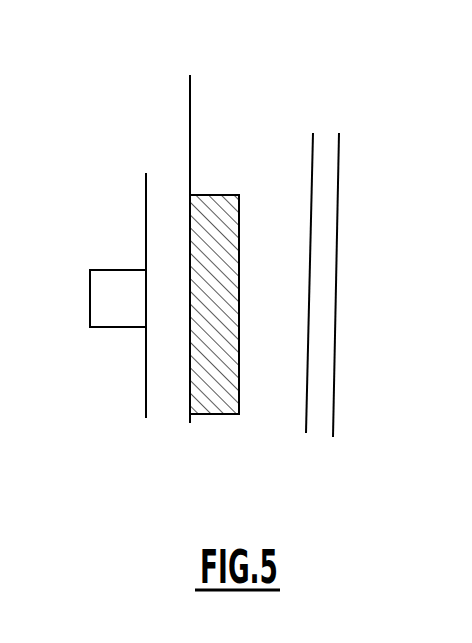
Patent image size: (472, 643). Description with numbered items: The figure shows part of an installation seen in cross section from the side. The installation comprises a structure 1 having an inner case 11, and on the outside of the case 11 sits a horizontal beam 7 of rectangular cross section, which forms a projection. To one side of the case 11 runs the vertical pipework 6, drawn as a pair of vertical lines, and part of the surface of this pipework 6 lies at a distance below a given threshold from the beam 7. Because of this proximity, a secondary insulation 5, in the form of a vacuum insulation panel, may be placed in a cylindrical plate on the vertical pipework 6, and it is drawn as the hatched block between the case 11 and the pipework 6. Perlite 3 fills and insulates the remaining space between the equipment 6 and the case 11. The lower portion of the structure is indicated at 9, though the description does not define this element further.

The structure 1 is at (157, 230).
The perlite 3 is at (215, 137).
The secondary insulation 5 is at (228, 242).
The vertical pipework 6 is at (322, 220).
The horizontal beam 7 is at (107, 302).
The lower portion of first wall 9 is at (145, 355).
The inner case 11 is at (187, 377).